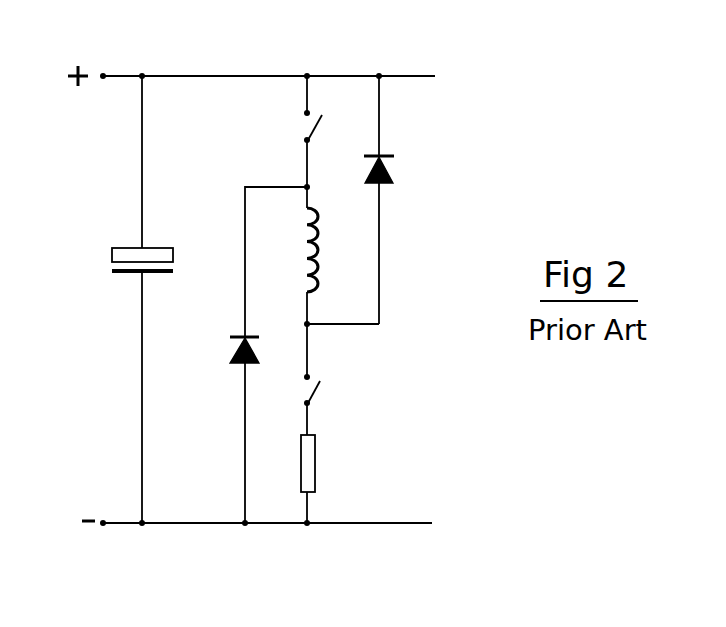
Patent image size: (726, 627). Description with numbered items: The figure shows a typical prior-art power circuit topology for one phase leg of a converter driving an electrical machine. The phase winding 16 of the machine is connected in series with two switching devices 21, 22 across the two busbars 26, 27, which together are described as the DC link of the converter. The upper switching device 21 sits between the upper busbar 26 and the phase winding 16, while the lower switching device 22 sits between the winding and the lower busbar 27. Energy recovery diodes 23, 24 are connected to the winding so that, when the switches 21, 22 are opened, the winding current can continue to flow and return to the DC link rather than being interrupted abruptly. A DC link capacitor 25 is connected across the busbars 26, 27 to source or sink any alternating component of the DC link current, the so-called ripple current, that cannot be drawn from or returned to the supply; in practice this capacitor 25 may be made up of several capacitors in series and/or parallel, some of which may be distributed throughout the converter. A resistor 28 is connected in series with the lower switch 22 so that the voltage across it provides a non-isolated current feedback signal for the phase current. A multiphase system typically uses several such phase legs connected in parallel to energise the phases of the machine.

The phase winding 16 is at (327, 230).
The switching device 21 is at (303, 127).
The lower switching device 22 is at (322, 388).
The energy recovery diode 23 is at (398, 165).
The energy recovery diode 24 is at (230, 346).
The DC link capacitor 25 is at (105, 263).
The busbar 26 is at (220, 76).
The busbar 27 is at (200, 523).
The resistor 28 is at (316, 461).